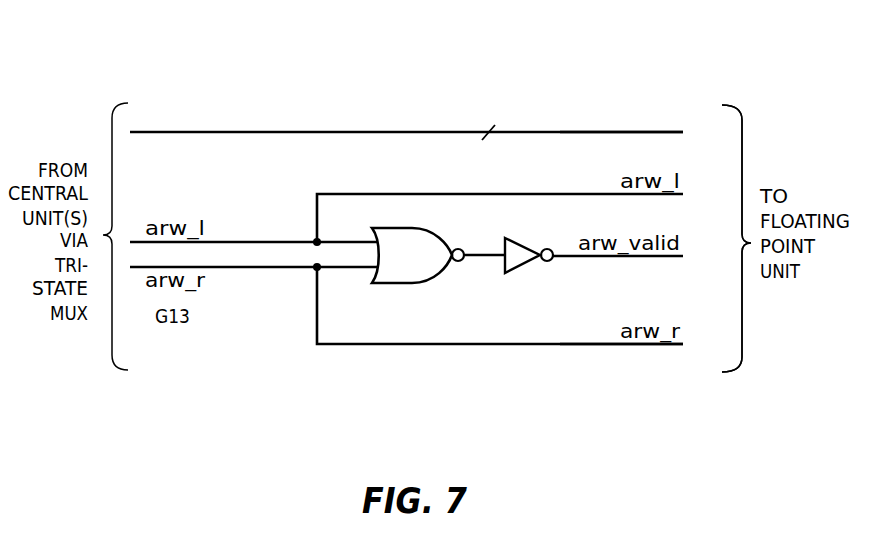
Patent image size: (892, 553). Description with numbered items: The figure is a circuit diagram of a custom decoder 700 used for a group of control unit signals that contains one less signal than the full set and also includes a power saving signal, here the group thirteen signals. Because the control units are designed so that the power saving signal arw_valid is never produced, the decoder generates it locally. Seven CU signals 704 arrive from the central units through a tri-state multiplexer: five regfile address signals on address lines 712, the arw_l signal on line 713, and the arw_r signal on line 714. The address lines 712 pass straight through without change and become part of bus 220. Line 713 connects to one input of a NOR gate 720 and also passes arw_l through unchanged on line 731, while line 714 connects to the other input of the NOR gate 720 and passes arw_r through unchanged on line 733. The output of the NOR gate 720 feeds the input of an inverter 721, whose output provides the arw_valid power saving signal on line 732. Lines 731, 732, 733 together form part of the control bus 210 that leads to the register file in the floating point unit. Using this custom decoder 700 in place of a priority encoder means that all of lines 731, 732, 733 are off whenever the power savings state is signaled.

The CU signals 704 is at (200, 90).
The address lines 712 is at (208, 134).
The bus 220 is at (572, 134).
The line 713 is at (288, 238).
The line 714 is at (273, 270).
The NOR gate 720 is at (435, 279).
The inverter 721 is at (527, 265).
The line 731 is at (665, 196).
The line 732 is at (665, 258).
The line 733 is at (638, 346).
The control bus 210 is at (609, 362).
The decoder 700 is at (641, 418).